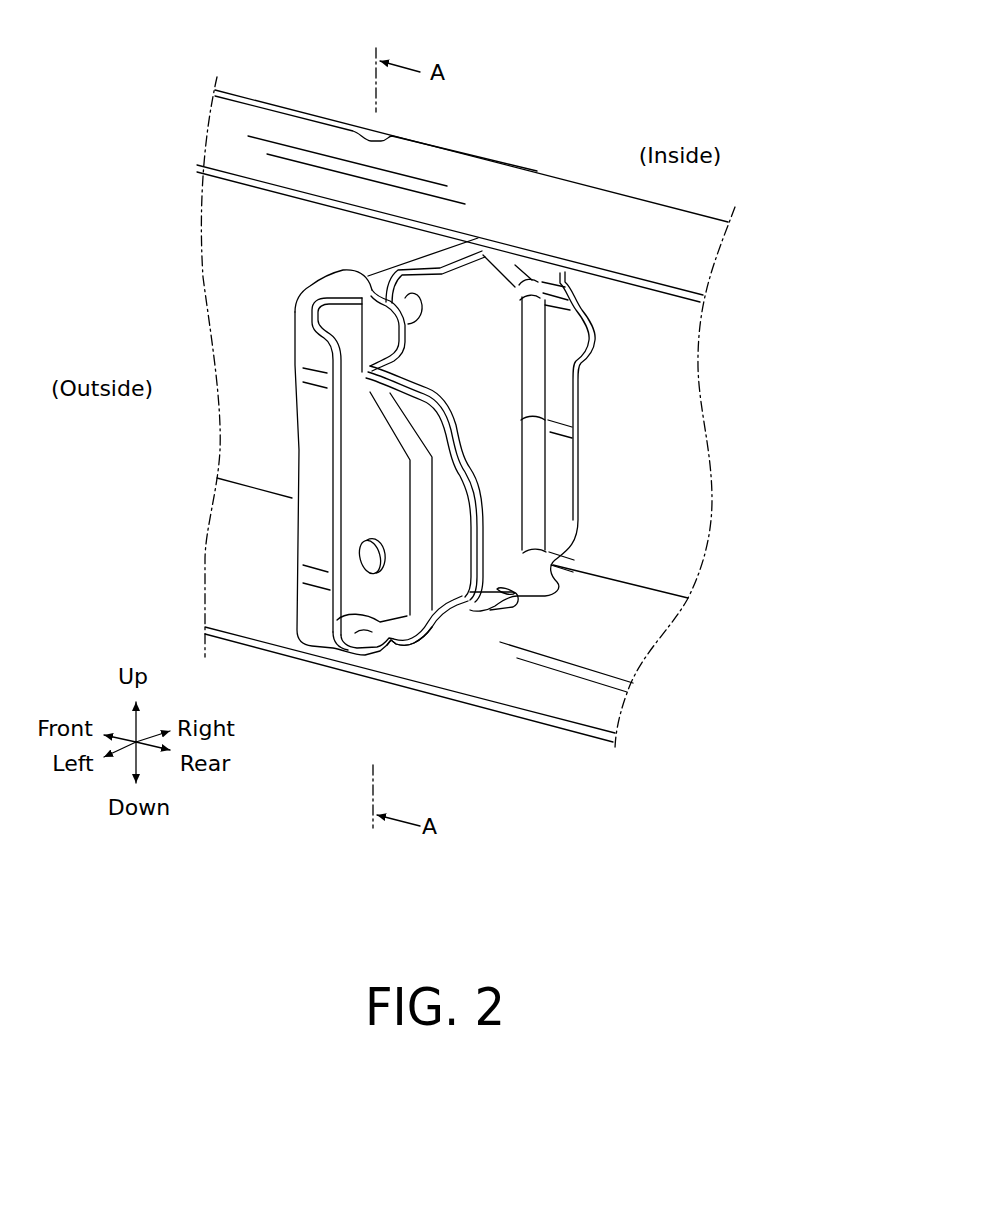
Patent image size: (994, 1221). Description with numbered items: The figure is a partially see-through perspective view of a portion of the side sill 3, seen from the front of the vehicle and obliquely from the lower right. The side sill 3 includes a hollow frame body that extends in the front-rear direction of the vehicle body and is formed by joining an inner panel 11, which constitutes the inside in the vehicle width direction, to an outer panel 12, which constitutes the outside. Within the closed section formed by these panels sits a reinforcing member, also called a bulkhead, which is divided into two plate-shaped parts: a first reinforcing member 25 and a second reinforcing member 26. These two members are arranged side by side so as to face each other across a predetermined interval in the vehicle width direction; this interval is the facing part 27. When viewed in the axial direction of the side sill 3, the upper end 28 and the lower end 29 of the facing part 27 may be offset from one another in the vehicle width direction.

The side sill 3 is at (468, 108).
The outer panel 12 is at (270, 232).
The inner panel 11 is at (667, 362).
The upper end 28 is at (381, 288).
The facing part 27 is at (420, 419).
The lower end 29 is at (460, 597).
The second reinforcing member 26 is at (415, 647).
The first reinforcing member 25 is at (503, 611).